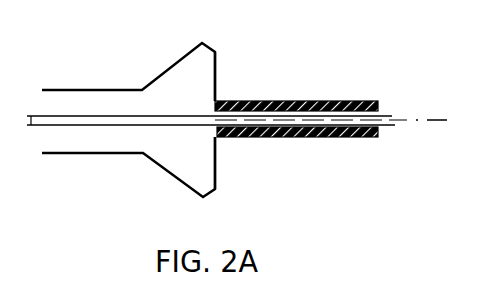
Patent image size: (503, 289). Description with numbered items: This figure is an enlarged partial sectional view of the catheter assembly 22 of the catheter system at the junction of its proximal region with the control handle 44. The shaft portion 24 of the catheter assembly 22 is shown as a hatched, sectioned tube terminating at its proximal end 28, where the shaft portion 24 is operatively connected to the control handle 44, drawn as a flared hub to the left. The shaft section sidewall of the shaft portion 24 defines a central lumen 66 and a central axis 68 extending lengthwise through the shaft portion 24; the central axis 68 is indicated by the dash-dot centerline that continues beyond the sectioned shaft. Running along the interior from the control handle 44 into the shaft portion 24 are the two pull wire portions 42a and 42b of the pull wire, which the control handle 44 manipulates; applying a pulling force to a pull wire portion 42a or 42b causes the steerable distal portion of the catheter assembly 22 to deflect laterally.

The catheter assembly 22 is at (248, 134).
The shaft portion 24 is at (282, 102).
The proximal end 28 is at (218, 102).
The control handle 44 is at (52, 90).
The pull wire portion 42a is at (32, 126).
The pull wire portion 42b is at (54, 126).
The central lumen 66 is at (220, 130).
The central axis 68 is at (433, 115).